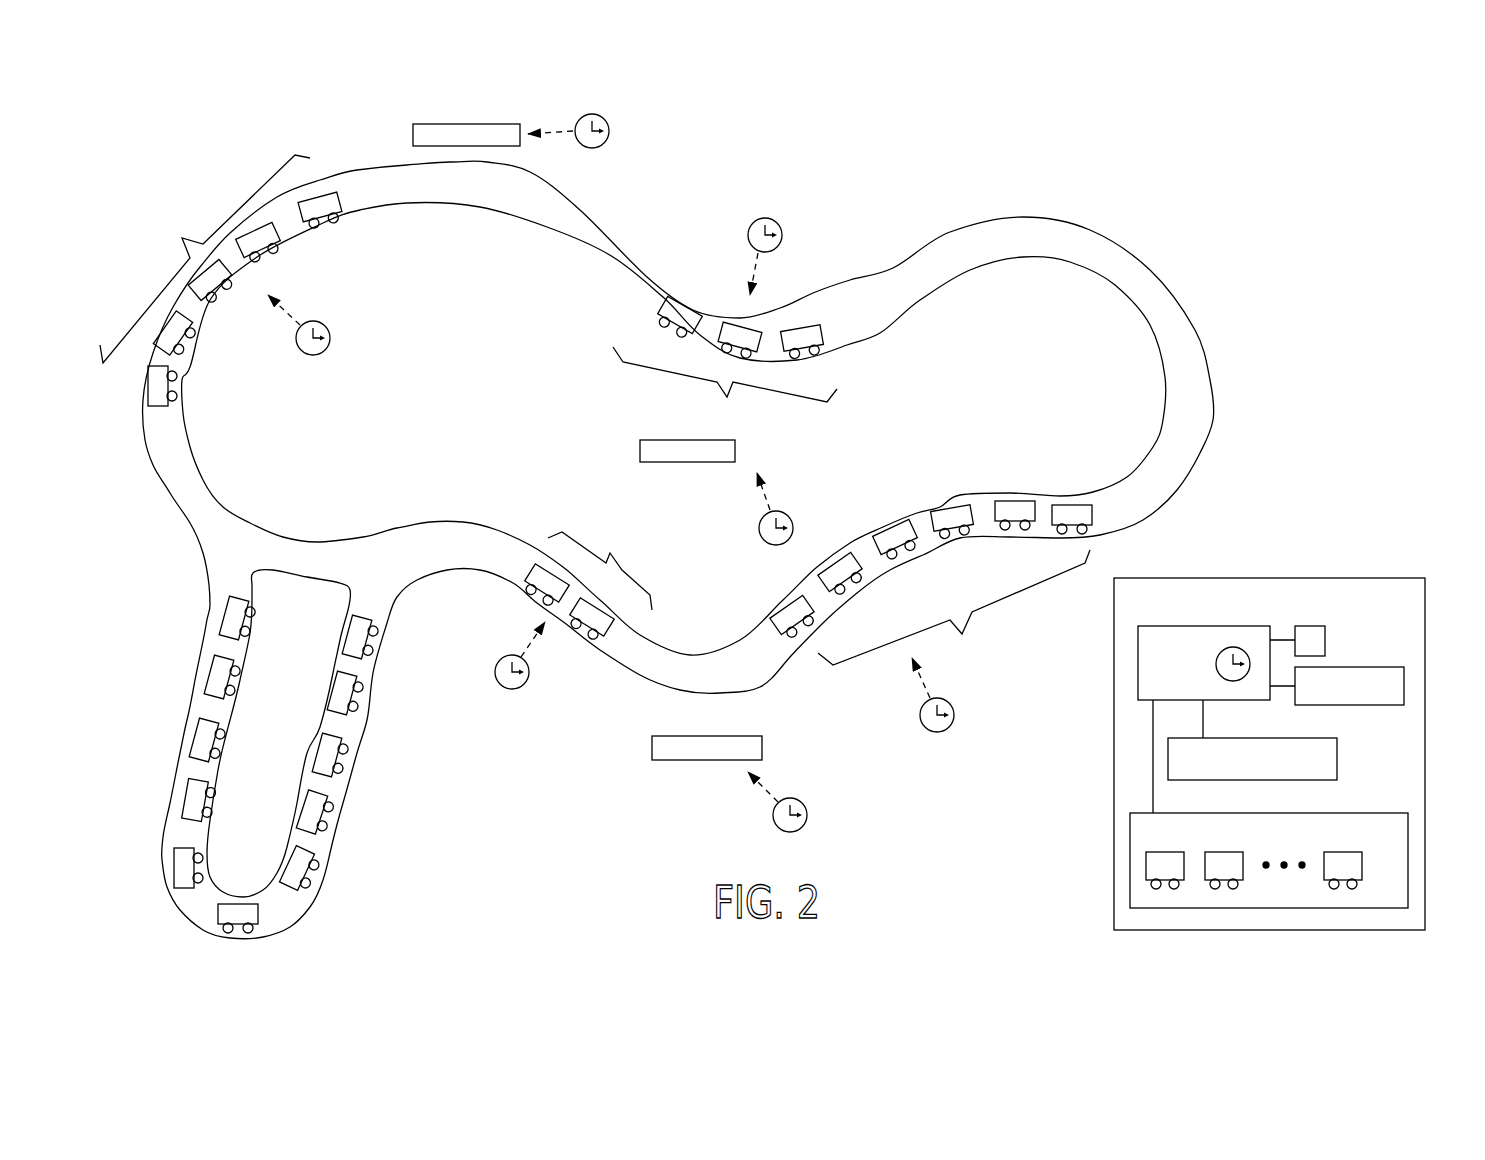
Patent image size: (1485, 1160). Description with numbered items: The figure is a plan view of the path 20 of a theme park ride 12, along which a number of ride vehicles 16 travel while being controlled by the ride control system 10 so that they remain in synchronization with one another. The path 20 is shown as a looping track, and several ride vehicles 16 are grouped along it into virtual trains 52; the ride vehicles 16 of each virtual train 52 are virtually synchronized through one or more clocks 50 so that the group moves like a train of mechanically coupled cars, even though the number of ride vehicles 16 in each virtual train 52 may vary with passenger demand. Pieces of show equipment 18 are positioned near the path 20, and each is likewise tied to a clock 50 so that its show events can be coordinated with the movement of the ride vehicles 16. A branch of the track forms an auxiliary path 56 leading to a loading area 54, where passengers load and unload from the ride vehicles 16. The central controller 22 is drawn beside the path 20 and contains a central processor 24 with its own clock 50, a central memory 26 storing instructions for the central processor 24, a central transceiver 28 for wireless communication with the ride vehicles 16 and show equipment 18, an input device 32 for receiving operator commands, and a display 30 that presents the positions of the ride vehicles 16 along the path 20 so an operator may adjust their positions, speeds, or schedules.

The ride control system 10 is at (1200, 225).
The theme park ride 12 is at (1252, 158).
The ride vehicle 16 is at (740, 322).
The show equipment 18 is at (413, 136).
The path 20 is at (1182, 318).
The central controller 22 is at (1257, 730).
The central processor 24 is at (1138, 668).
The central memory 26 is at (1404, 686).
The central transceiver 28 is at (1337, 758).
The display 30 is at (1130, 862).
The input device 32 is at (1325, 640).
The clock 50 is at (592, 148).
The virtual train 52 is at (595, 410).
The loading area 54 is at (452, 862).
The auxiliary path 56 is at (293, 810).